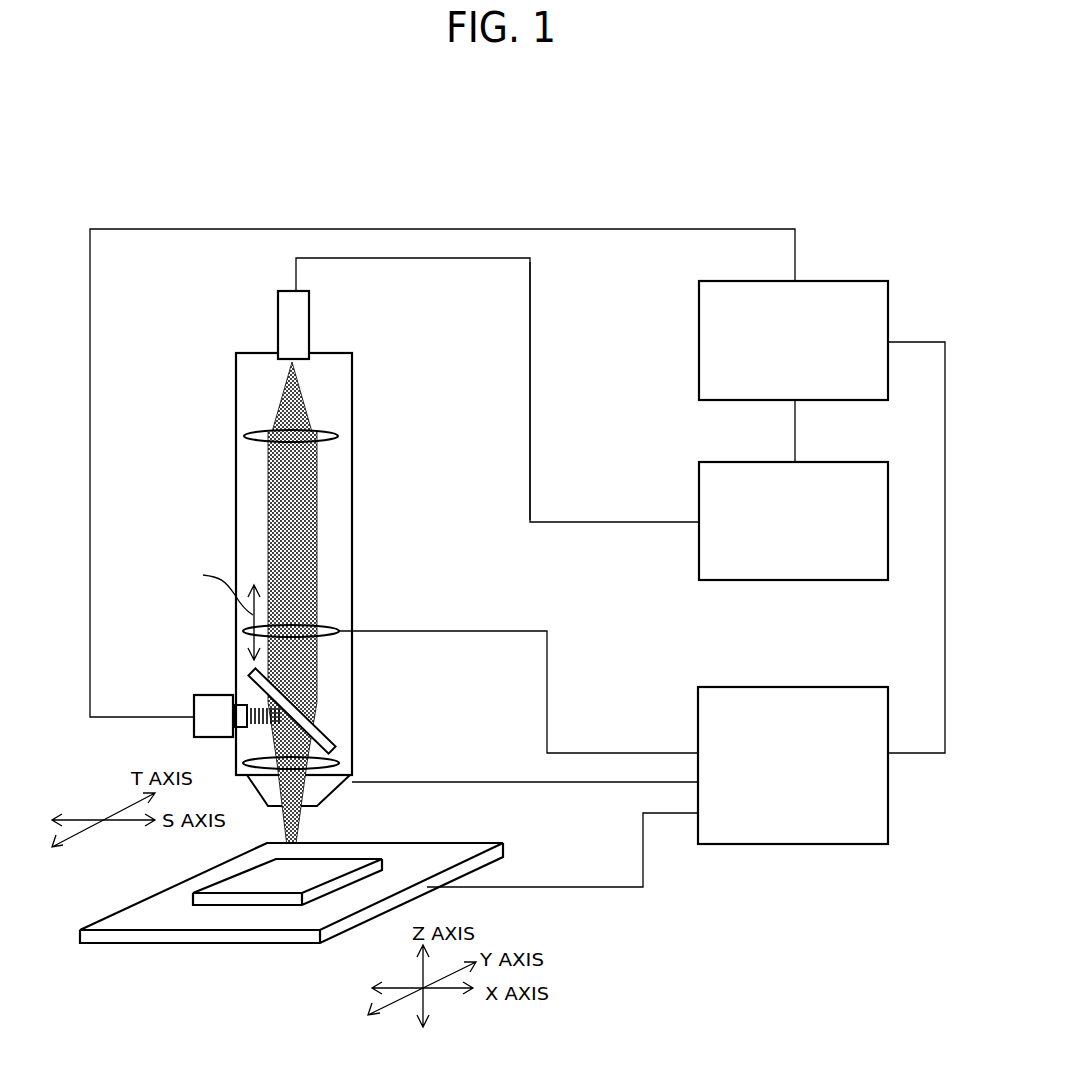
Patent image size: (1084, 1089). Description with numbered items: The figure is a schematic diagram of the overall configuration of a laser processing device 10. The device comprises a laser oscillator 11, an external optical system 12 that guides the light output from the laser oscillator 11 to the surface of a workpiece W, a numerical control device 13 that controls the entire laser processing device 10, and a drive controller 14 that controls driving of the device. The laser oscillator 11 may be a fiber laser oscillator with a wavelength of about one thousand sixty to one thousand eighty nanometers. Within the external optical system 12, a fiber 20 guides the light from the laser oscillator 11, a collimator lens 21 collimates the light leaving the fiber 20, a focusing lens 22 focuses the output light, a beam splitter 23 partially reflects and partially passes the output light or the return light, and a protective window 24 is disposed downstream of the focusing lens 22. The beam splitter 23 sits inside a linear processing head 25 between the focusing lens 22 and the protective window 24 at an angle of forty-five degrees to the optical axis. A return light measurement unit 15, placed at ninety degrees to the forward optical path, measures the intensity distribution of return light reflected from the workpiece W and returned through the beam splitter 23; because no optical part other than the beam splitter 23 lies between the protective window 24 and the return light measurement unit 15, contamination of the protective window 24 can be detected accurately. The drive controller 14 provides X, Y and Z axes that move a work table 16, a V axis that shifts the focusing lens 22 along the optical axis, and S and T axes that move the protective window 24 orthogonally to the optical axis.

The laser processing device 10 is at (785, 163).
The laser oscillator 11 is at (748, 580).
The external optical system 12 is at (243, 338).
The numerical control device 13 is at (853, 281).
The drive controller 14 is at (787, 687).
The return light measurement unit 15 is at (210, 705).
The work table 16 is at (167, 920).
The fiber 20 is at (530, 380).
The collimator lens 21 is at (323, 433).
The focusing lens 22 is at (320, 623).
The beam splitter 23 is at (320, 733).
The protective window 24 is at (337, 758).
The linear processing head 25 is at (332, 353).
The workpiece W is at (253, 885).